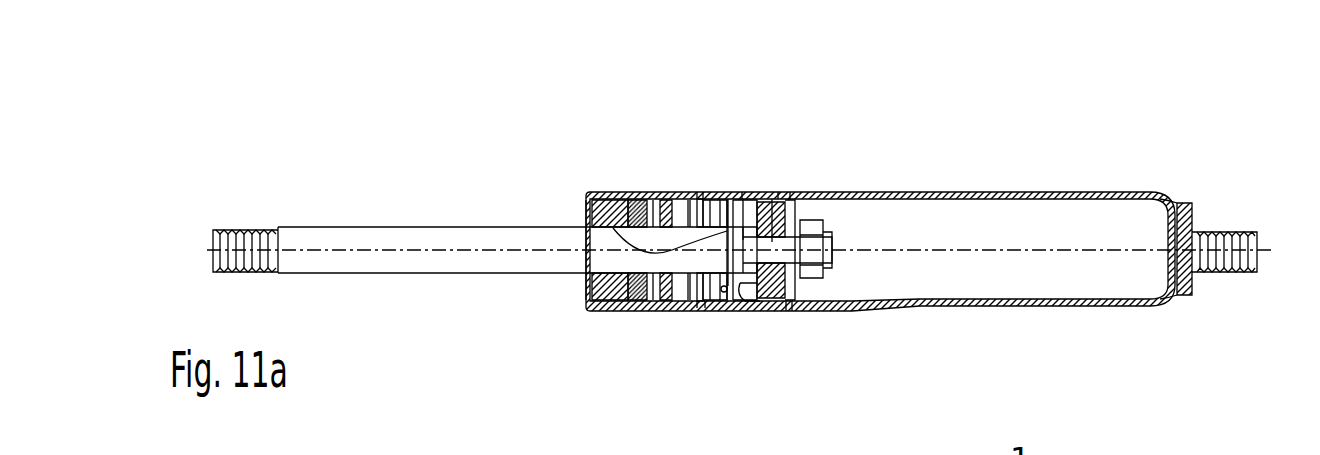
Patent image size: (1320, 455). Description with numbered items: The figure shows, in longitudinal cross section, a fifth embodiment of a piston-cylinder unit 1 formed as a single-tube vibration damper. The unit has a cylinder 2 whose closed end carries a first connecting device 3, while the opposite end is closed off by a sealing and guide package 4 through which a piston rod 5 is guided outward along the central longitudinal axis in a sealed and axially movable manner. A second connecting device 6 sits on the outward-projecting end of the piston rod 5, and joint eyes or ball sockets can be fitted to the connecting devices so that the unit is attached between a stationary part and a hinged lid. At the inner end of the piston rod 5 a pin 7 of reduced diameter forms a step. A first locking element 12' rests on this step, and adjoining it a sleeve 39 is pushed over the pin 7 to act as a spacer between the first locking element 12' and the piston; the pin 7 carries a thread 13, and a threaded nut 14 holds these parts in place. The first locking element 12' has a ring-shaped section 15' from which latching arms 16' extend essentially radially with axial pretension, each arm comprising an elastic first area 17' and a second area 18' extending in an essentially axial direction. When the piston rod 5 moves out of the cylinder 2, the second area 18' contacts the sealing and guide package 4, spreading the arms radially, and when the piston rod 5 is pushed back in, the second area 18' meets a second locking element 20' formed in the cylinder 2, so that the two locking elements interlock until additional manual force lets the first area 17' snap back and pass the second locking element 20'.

The piston-cylinder unit 1 is at (972, 82).
The cylinder 2 is at (1048, 191).
The first connecting device 3 is at (1252, 233).
The sealing and guide package 4 is at (620, 343).
The piston rod 5 is at (370, 240).
The second connecting device 6 is at (242, 228).
The pin 7 is at (772, 195).
The first locking element 12' is at (730, 174).
The thread 13 is at (835, 235).
The threaded nut 14 is at (823, 237).
The ring-shaped section 15' is at (645, 217).
The latching arms 16' is at (675, 203).
The elastic first area 17' is at (764, 295).
The second area 18' is at (709, 180).
The second locking element 20' is at (728, 295).
The sleeve 39 is at (747, 195).